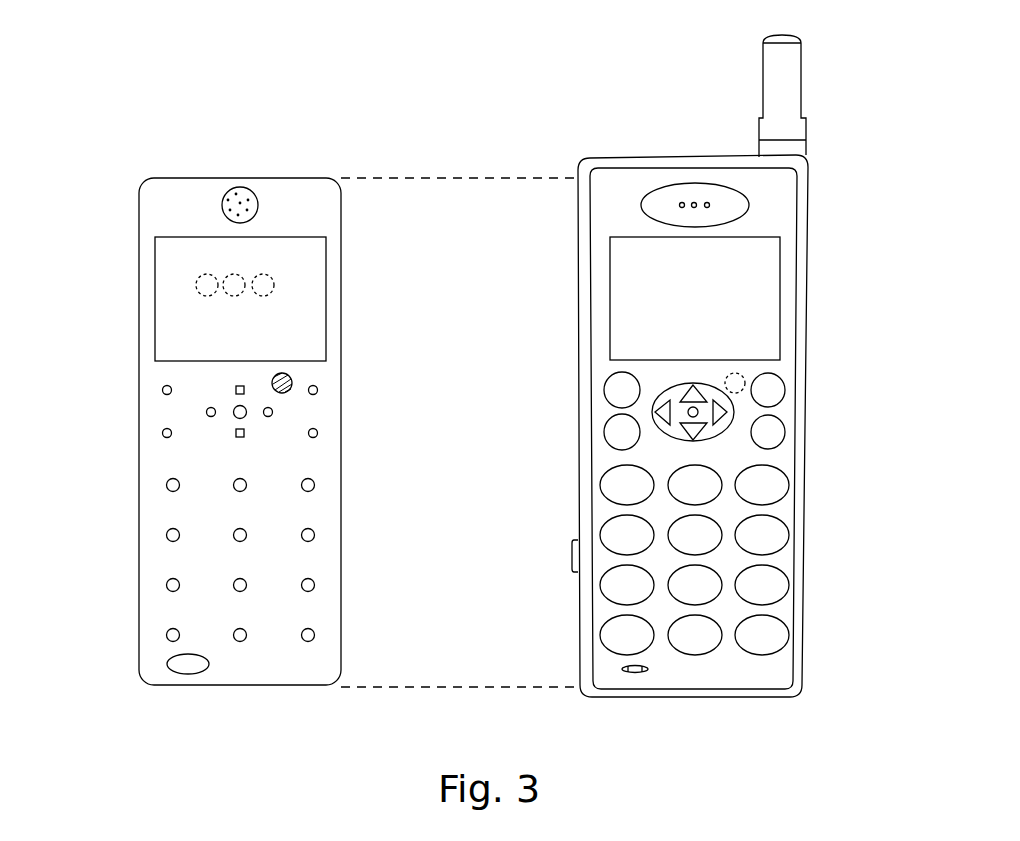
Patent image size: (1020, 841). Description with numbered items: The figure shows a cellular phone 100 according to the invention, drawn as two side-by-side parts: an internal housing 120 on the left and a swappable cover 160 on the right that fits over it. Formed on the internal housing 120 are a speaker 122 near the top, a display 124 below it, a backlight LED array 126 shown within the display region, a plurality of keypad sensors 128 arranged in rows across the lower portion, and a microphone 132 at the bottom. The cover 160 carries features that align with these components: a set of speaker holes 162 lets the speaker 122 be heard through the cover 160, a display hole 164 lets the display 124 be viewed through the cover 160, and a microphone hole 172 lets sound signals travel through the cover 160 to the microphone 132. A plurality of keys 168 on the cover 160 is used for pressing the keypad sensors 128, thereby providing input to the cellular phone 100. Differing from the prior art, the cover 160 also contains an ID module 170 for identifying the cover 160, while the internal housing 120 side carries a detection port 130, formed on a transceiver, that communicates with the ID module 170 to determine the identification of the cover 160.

The cellular phone 100 is at (323, 92).
The internal housing 120 is at (139, 213).
The speaker 122 is at (246, 190).
The display 124 is at (172, 256).
The backlight LED array 126 is at (195, 297).
The keypad sensors 128 is at (162, 432).
The detection port 130 is at (290, 377).
The microphone 132 is at (187, 668).
The swappable cover 160 is at (812, 250).
The speaker holes 162 is at (687, 193).
The display hole 164 is at (758, 333).
The keys 168 is at (768, 392).
The ID module 170 is at (746, 373).
The microphone hole 172 is at (636, 673).